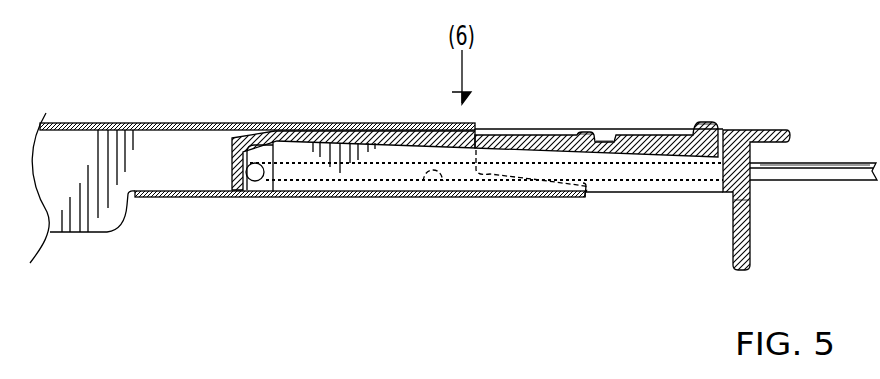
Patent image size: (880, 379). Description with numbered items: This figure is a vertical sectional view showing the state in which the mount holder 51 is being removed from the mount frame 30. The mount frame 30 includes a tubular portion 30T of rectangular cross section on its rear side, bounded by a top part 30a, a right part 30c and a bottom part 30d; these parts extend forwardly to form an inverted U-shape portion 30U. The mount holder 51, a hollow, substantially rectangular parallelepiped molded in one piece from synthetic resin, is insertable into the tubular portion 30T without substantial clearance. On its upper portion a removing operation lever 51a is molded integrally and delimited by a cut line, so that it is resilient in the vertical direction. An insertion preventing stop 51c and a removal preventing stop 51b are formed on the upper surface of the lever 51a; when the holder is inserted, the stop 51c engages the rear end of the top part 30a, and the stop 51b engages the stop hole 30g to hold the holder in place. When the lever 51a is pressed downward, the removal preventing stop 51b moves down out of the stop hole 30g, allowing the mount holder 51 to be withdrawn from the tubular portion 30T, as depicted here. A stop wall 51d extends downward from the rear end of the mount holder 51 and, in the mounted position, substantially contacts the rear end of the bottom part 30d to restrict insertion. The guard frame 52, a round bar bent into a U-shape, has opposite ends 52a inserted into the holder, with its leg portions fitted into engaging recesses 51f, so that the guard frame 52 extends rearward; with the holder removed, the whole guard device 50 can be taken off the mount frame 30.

The mount frame 30 is at (109, 248).
The inverted U-shape portion 30U is at (63, 240).
The top part 30a is at (168, 124).
The right part 30c is at (177, 163).
The tubular portion 30T is at (322, 118).
The stop hole 30g is at (440, 125).
The bottom part 30d is at (307, 197).
The mount holder 51 is at (748, 122).
The removing operation lever 51a is at (658, 136).
The removal preventing stop 51b is at (575, 130).
The insertion preventing stop 51c is at (610, 133).
The stop wall 51d is at (733, 228).
The engaging recesses 51f is at (443, 181).
The guard device 50 is at (820, 154).
The guard frame 52 is at (821, 172).
The opposite ends 52a is at (247, 182).